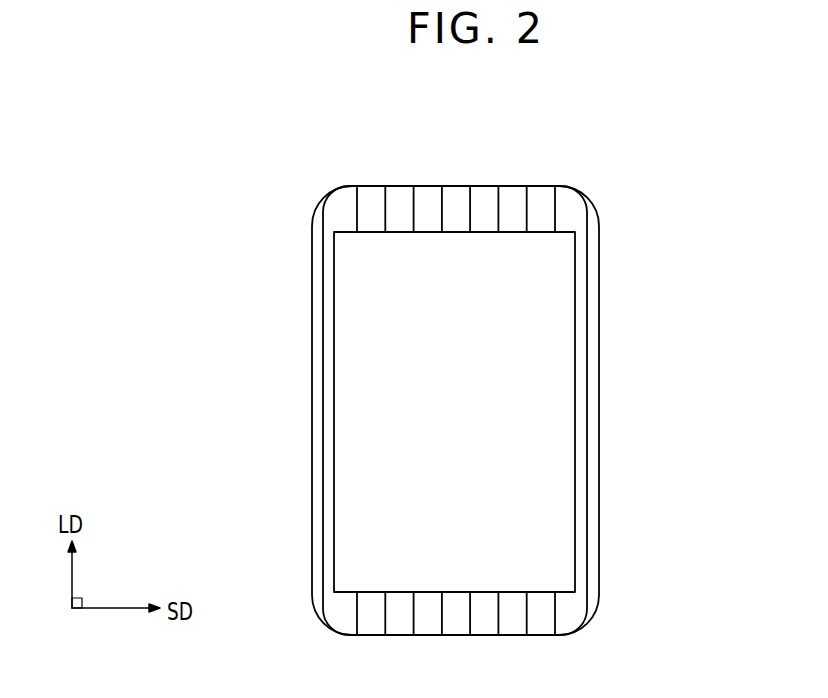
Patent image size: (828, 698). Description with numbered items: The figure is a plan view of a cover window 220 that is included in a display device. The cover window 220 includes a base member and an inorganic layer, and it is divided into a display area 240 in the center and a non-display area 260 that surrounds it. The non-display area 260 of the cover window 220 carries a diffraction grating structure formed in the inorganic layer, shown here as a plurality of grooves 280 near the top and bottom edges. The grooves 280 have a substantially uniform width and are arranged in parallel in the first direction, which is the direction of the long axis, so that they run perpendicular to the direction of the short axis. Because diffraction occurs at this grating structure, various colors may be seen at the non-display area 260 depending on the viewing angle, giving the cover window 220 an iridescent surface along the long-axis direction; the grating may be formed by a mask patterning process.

The cover window 220 is at (572, 190).
The display area 240 is at (558, 412).
The non-display area 260 is at (338, 203).
The grooves 280 is at (358, 207).